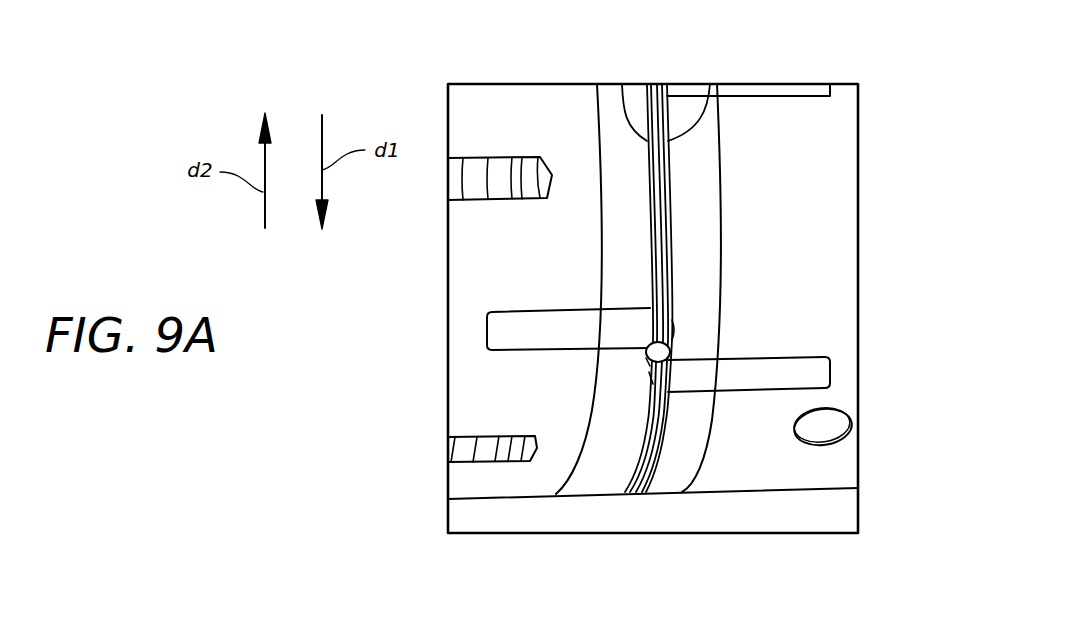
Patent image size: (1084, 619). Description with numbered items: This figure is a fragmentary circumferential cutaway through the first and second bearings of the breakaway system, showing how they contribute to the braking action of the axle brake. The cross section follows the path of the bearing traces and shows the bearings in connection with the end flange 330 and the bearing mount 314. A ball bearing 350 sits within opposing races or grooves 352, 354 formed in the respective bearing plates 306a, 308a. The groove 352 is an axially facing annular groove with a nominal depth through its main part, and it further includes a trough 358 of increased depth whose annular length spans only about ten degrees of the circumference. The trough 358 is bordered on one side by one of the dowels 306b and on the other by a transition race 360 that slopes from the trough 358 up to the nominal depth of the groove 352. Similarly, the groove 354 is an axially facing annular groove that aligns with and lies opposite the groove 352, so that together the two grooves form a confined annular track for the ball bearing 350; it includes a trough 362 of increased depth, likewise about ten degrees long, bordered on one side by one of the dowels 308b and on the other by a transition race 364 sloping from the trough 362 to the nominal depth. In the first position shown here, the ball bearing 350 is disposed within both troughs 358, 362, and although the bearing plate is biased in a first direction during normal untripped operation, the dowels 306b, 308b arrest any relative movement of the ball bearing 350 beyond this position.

The bearing plate 306a is at (605, 480).
The dowel 306b is at (505, 328).
The bearing plate 308a is at (663, 480).
The dowel 308b is at (773, 372).
The bearing mount 314 is at (845, 337).
The end flange 330 is at (462, 482).
The ball bearing 350 is at (658, 349).
The groove 352 is at (622, 84).
The groove 354 is at (710, 84).
The trough 358 is at (648, 363).
The transition race 360 is at (652, 378).
The trough 362 is at (657, 86).
The transition race 364 is at (675, 327).